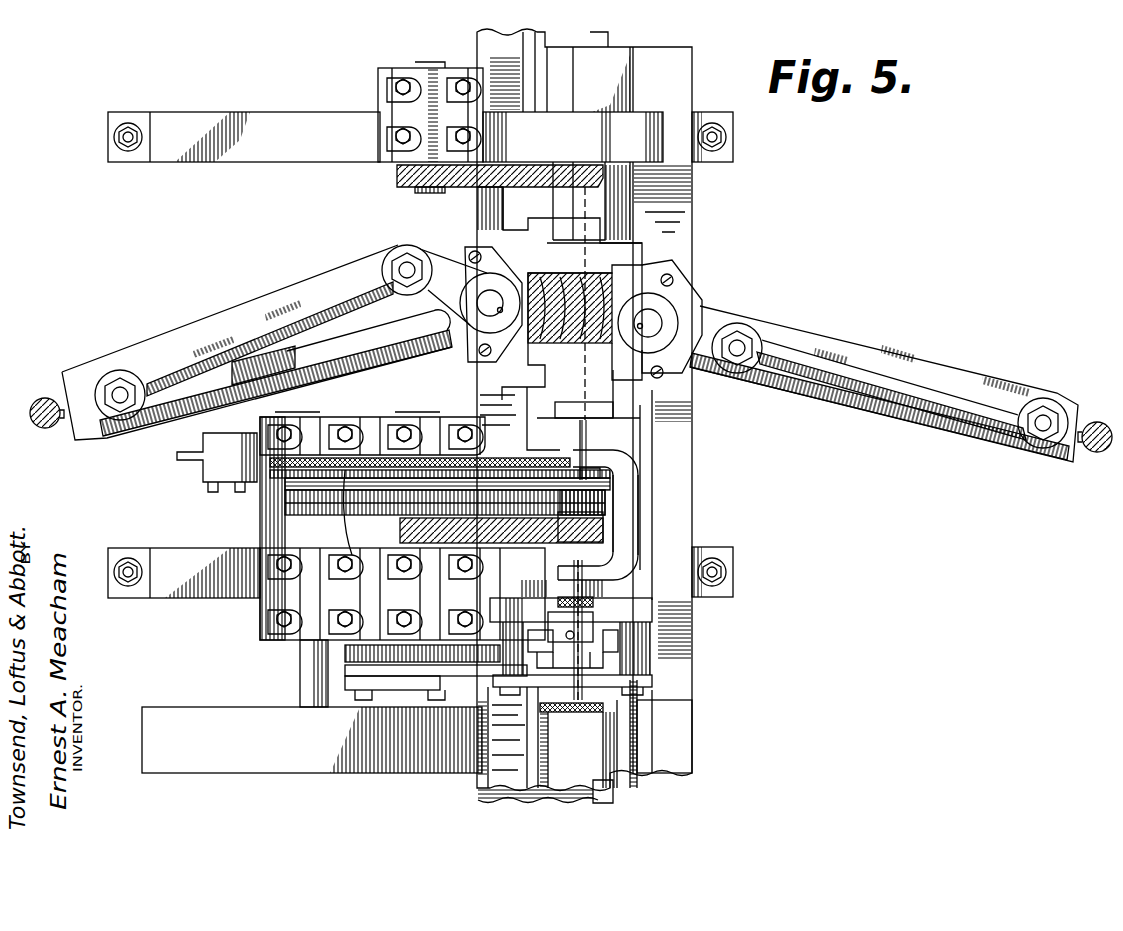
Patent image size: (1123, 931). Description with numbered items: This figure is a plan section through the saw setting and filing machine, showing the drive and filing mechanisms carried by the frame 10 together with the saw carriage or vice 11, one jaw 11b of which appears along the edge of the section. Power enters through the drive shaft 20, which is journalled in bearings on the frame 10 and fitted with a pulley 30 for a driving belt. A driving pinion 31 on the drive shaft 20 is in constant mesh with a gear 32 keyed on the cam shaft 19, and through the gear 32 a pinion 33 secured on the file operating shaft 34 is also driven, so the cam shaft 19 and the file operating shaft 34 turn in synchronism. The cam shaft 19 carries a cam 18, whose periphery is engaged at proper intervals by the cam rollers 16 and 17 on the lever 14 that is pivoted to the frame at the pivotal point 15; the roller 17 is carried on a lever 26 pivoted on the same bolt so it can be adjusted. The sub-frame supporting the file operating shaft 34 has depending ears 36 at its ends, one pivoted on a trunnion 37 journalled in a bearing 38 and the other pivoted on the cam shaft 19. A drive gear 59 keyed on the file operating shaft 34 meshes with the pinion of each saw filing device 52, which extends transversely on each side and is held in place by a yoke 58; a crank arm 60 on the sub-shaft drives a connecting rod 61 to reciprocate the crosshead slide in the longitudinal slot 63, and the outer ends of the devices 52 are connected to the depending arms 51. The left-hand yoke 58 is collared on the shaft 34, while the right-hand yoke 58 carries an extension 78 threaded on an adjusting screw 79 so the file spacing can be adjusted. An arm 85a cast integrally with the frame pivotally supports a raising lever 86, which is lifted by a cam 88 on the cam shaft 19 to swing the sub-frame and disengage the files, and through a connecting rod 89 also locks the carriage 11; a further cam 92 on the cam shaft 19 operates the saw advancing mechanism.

The frame 10 is at (258, 162).
The saw carriage or vice 11 is at (640, 755).
The jaw 11b is at (680, 740).
The lever 14 is at (355, 670).
The pivotal point 15 is at (345, 683).
The cam roller 16 is at (600, 645).
The cam roller 17 is at (658, 668).
The cam 18 is at (380, 653).
The cam shaft 19 is at (440, 536).
The drive shaft 20 is at (305, 698).
The lever 26 is at (408, 685).
The pulley 30 is at (312, 740).
The driving pinion 31 is at (300, 500).
The gear 32 is at (355, 460).
The pinion 33 is at (600, 500).
The file operating shaft 34 is at (575, 438).
The depending ears 36 is at (593, 533).
The trunnion 37 is at (430, 190).
The bearing 38 is at (430, 112).
The depending arms 51 is at (1097, 455).
The saw filing devices 52 is at (958, 362).
The yoke 58 is at (510, 222).
The drive gear 59 is at (660, 297).
The crank arm 60 is at (707, 330).
The connecting rod 61 is at (850, 362).
The longitudinal slot 63 is at (345, 333).
The extension 78 is at (647, 522).
The adjusting screw 79 is at (652, 598).
The arm 85a is at (205, 447).
The raising lever 86 is at (600, 473).
The cam 88 is at (505, 460).
The connecting rod 89 is at (215, 487).
The cam 92 is at (412, 458).